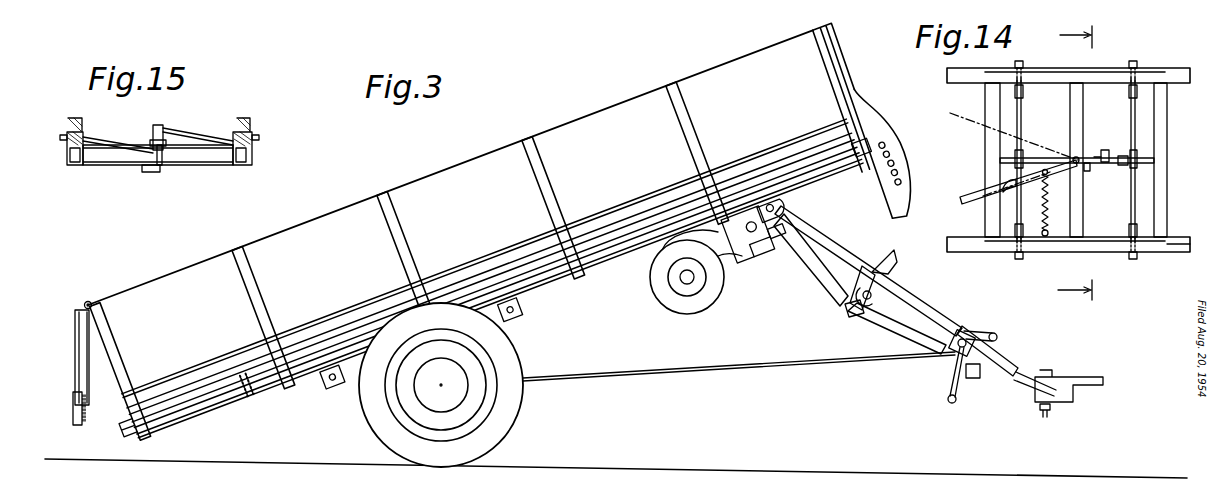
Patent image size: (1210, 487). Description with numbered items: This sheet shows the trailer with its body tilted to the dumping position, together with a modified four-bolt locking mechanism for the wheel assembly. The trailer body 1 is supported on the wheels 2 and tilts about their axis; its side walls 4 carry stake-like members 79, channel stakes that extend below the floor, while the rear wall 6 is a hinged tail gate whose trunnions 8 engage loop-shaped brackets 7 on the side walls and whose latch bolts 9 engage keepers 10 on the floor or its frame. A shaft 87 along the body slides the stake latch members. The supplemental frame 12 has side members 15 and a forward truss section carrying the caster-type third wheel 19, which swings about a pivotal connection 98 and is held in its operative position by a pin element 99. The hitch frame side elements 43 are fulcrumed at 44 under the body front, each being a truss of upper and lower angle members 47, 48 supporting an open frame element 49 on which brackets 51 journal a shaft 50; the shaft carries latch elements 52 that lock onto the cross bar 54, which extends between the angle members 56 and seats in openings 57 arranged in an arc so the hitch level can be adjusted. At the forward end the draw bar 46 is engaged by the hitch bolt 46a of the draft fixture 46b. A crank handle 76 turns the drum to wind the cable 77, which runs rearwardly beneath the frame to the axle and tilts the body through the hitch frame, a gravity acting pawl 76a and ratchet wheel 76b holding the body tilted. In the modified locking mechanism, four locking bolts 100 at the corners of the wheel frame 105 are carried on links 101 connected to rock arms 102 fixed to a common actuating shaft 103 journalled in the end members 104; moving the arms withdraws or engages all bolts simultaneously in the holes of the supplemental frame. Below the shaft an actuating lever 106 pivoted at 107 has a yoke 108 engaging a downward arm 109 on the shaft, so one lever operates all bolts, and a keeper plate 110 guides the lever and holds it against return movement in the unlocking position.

In FIG. 3, the trailer body 1 is at (557, 123).
In FIG. 3, the supporting wheels 2 is at (367, 427).
In FIG. 3, the side walls 4 is at (449, 180).
In FIG. 3, the rear wall 6 is at (76, 351).
In FIG. 3, the loop-shaped brackets 7 is at (86, 301).
In FIG. 3, the trunnions 8 is at (97, 303).
In FIG. 3, the latch bolts 9 is at (72, 403).
In FIG. 3, the keepers 10 is at (122, 427).
In FIG. 14, the supplemental frame 12 is at (1177, 258).
In FIG. 14, the side members 15 is at (960, 262).
In FIG. 3, the third wheel 19 is at (667, 310).
In FIG. 3, the side elements 43 is at (912, 288).
In FIG. 3, the fulcrum 44 is at (781, 204).
In FIG. 3, the draw bar 46 is at (1025, 388).
In FIG. 3, the hitch bolt 46a is at (1046, 418).
In FIG. 3, the draft fixture 46b is at (1079, 376).
In FIG. 3, the upper angle member 47 is at (850, 251).
In FIG. 3, the lower angle member 48 is at (831, 302).
In FIG. 3, the open frame element 49 is at (858, 284).
In FIG. 3, the shaft 50 is at (874, 299).
In FIG. 3, the brackets 51 is at (859, 317).
In FIG. 3, the latch elements 52 is at (903, 249).
In FIG. 3, the cross bar 54 is at (895, 161).
In FIG. 3, the angle members 56 is at (853, 66).
In FIG. 3, the openings 57 is at (887, 147).
In FIG. 3, the crank handle 76 is at (950, 380).
In FIG. 3, the gravity acting pawl 76a is at (982, 328).
In FIG. 3, the ratchet wheel 76b is at (972, 372).
In FIG. 3, the cable 77 is at (718, 375).
In FIG. 3, the stake-like members 79 is at (262, 302).
In FIG. 3, the shaft 87 is at (247, 386).
In FIG. 3, the pivotal connection 98 is at (754, 240).
In FIG. 3, the pin element 99 is at (778, 264).
In FIG. 14, the locking bolts 100 is at (1021, 67).
In FIG. 15, the locking bolts 100 is at (60, 137).
In FIG. 14, the links 101 is at (1022, 119).
In FIG. 15, the links 101 is at (120, 133).
In FIG. 14, the rock arms 102 is at (1013, 152).
In FIG. 15, the rock arms 102 is at (158, 126).
In FIG. 14, the actuating shaft 103 is at (1122, 168).
In FIG. 15, the actuating shaft 103 is at (155, 141).
In FIG. 14, the end members 104 is at (1160, 136).
In FIG. 14, the wheel frame 105 is at (1041, 256).
In FIG. 15, the wheel frame 105 is at (67, 165).
In FIG. 14, the actuating lever 106 is at (1003, 190).
In FIG. 15, the actuating lever 106 is at (153, 172).
In FIG. 14, the pivot 107 is at (1074, 156).
In FIG. 14, the yoke 108 is at (1107, 150).
In FIG. 14, the arm 109 is at (1090, 171).
In FIG. 15, the arm 109 is at (164, 157).
In FIG. 14, the keeper plate 110 is at (986, 179).